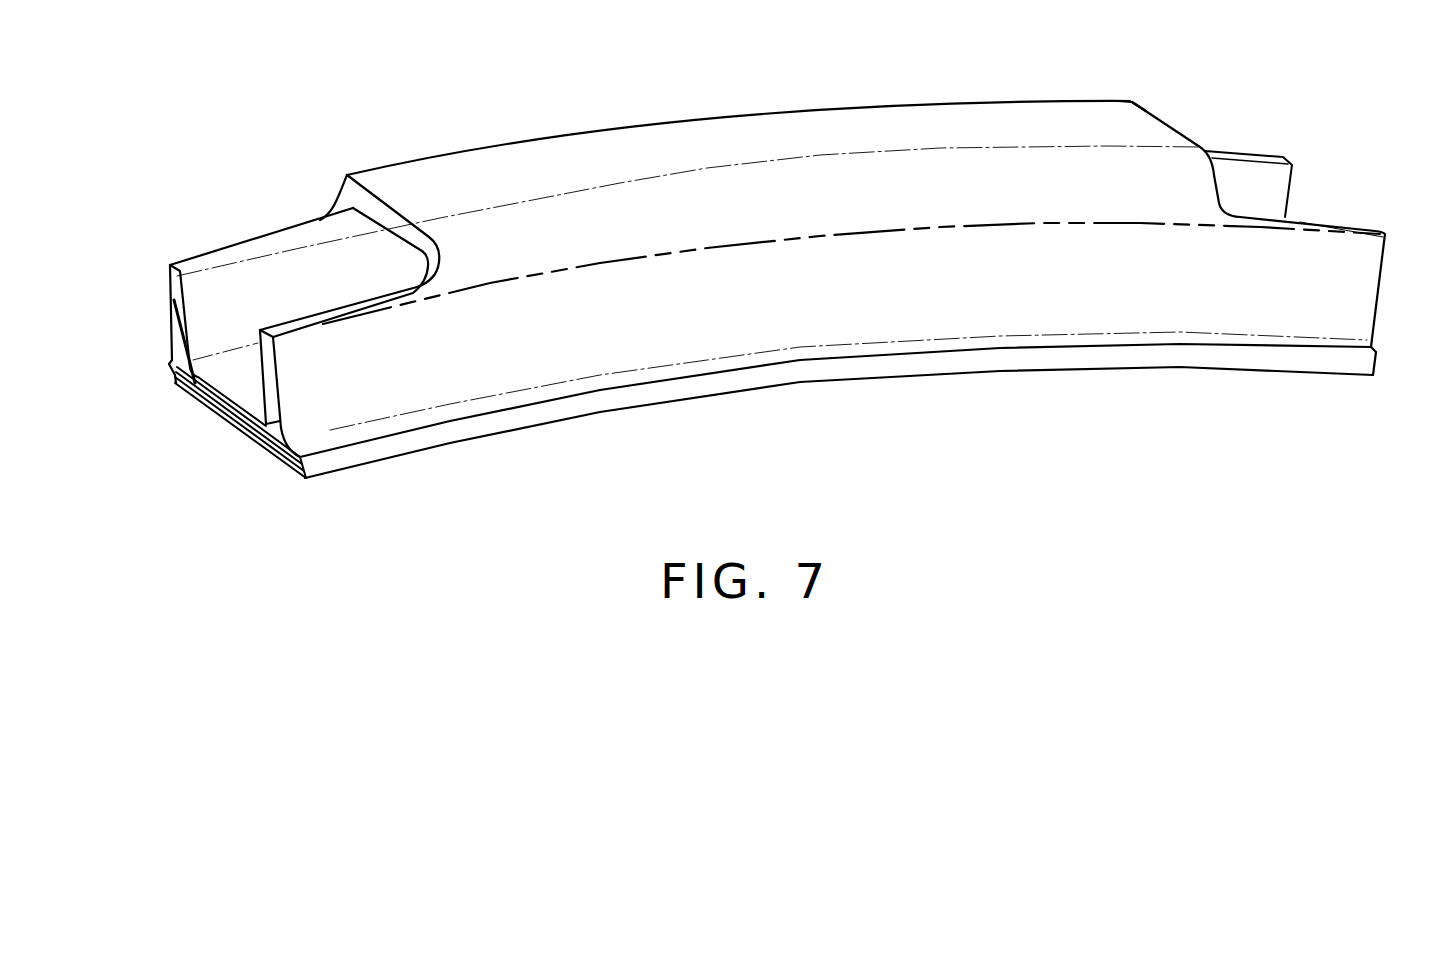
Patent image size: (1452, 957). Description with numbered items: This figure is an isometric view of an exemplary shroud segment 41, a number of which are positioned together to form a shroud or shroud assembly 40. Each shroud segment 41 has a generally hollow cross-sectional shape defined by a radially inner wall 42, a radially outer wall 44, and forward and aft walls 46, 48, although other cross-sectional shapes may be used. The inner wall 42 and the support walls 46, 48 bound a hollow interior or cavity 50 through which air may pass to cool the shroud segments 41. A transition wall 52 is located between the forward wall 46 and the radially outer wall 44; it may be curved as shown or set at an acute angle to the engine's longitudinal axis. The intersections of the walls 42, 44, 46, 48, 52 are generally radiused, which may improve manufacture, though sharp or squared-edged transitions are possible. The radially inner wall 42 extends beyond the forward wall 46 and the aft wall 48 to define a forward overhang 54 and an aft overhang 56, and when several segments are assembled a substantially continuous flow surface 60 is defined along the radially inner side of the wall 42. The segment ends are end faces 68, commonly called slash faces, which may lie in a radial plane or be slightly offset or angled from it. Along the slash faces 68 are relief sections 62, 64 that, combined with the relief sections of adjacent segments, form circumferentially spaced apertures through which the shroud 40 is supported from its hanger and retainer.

The shroud 40 is at (967, 372).
The shroud segment 41 is at (602, 100).
The radially inner wall 42 is at (278, 437).
The radially outer wall 44 is at (825, 118).
The forward wall 46 is at (1358, 215).
The aft wall 48 is at (1243, 140).
The cavity 50 is at (363, 265).
The transition wall 52 is at (347, 175).
The forward overhang 54 is at (407, 442).
The aft overhang 56 is at (172, 363).
The flow surface 60 is at (245, 435).
The relief section 62 is at (327, 203).
The relief section 64 is at (1232, 202).
The end face 68 is at (170, 317).